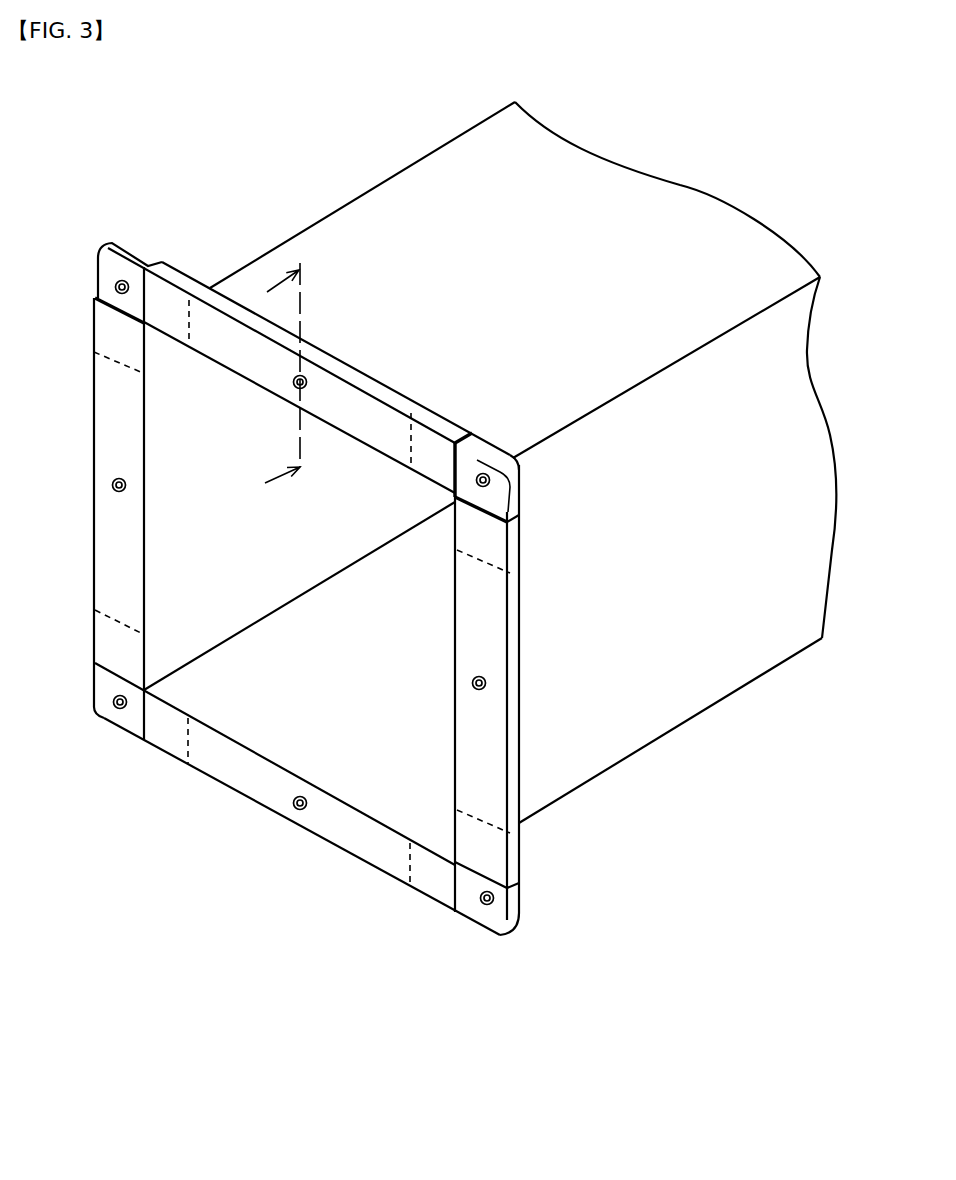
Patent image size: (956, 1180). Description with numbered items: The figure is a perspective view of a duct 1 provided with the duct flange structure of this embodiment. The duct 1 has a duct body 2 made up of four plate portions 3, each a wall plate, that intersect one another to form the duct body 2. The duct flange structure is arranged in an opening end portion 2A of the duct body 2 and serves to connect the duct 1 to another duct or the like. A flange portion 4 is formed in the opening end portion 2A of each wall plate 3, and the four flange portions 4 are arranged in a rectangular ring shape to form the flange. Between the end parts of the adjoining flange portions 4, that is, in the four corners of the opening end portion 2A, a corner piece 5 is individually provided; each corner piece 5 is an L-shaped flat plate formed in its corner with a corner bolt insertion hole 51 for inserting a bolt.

The duct 1 is at (770, 151).
The duct body 2 is at (619, 780).
The opening end portion 2A is at (269, 730).
The plate 3 is at (427, 170).
The flange portion 4 is at (108, 409).
The corner piece 5 is at (136, 246).
The corner bolt insertion hole 51 is at (116, 287).